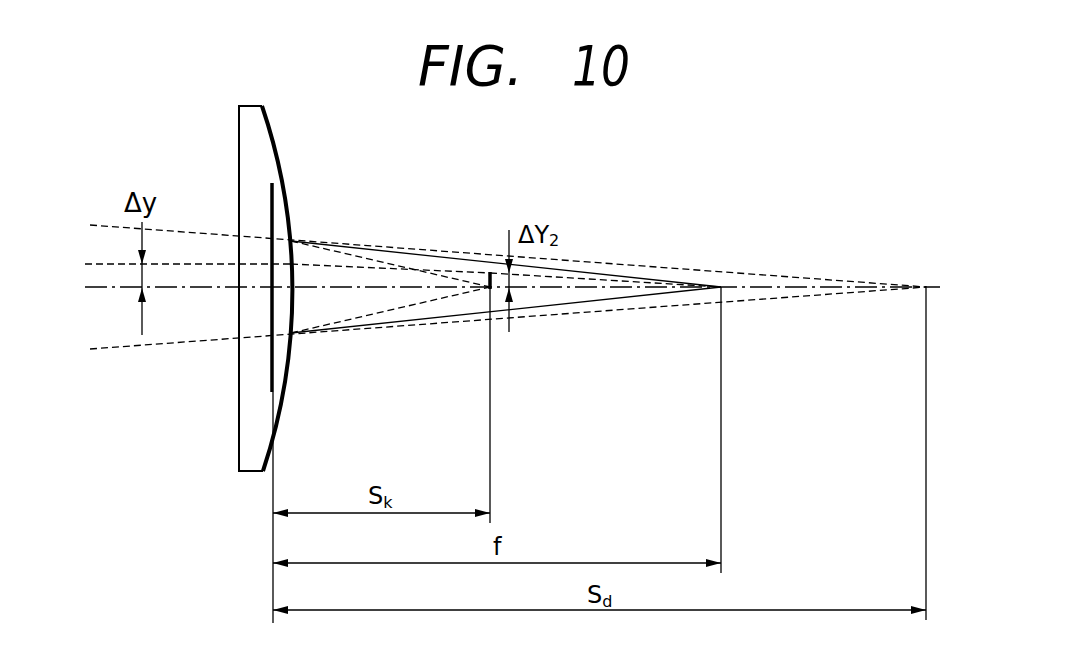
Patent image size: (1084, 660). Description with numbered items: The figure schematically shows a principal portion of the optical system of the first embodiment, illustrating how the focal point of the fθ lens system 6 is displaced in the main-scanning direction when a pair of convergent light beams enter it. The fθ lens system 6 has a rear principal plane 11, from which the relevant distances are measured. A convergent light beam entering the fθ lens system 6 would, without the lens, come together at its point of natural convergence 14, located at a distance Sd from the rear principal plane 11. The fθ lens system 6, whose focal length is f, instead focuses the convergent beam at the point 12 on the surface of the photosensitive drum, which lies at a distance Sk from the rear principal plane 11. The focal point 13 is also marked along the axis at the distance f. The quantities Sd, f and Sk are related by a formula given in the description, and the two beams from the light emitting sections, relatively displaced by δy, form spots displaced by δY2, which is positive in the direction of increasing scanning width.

The fθ lens system 6 is at (275, 142).
The rear principal plane 11 is at (275, 198).
The point where the convergent beam is focussed 12 is at (487, 277).
The focal point of refracted beam 13 is at (723, 283).
The point of natural convergence 14 is at (927, 283).